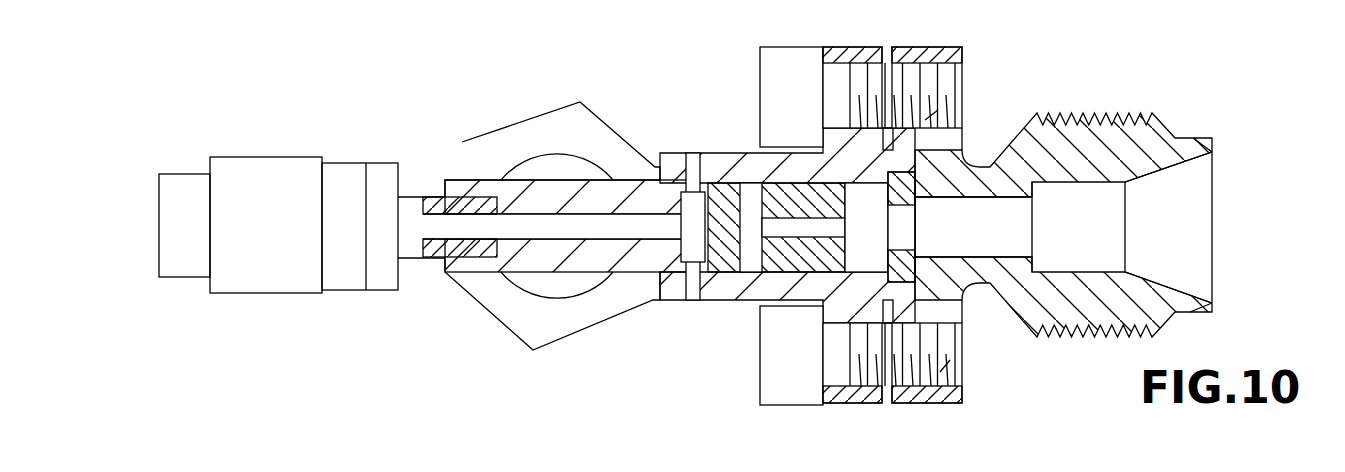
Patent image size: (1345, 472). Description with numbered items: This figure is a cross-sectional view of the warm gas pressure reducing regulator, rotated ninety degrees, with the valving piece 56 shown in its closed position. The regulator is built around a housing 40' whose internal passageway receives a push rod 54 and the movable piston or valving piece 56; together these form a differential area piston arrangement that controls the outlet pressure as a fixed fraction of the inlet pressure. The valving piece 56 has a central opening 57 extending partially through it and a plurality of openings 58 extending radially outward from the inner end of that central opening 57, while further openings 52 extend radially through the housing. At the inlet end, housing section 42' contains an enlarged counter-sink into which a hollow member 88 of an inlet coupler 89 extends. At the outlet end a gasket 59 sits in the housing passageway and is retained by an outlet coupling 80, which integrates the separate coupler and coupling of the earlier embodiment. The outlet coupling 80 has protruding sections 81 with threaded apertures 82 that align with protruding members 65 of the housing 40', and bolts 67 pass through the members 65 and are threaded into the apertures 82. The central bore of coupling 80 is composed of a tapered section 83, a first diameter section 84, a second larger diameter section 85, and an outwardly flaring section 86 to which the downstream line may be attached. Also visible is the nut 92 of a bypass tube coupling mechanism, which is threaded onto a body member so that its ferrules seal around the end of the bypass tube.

The housing 40' is at (624, 49).
The housing section 42' is at (540, 315).
The openings 52 is at (692, 302).
The push rod 54 is at (573, 227).
The valving piece 56 is at (793, 192).
The central opening 57 is at (803, 225).
The openings 58 is at (750, 193).
The gasket 59 is at (885, 198).
The protruding members 65 is at (843, 47).
The bolts 67 is at (760, 58).
The outlet coupling 80 is at (1098, 113).
The protruding sections 81 is at (922, 47).
The threaded apertures 82 is at (932, 123).
The tapered section 83 is at (927, 222).
The first diameter section 84 is at (1017, 236).
The second diameter section 85 is at (1064, 242).
The flaring section 86 is at (1158, 242).
The hollow member 88 is at (410, 208).
The inlet coupler 89 is at (268, 157).
The nut 92 is at (502, 143).